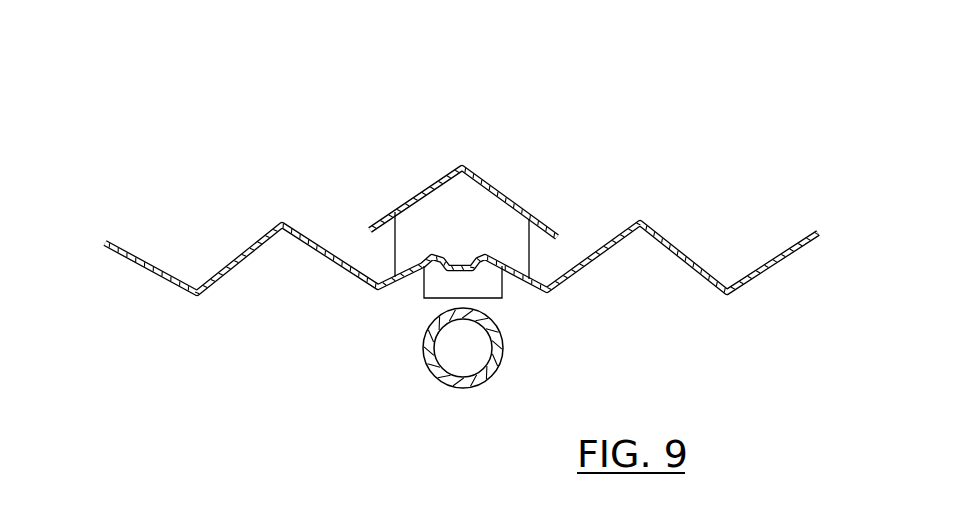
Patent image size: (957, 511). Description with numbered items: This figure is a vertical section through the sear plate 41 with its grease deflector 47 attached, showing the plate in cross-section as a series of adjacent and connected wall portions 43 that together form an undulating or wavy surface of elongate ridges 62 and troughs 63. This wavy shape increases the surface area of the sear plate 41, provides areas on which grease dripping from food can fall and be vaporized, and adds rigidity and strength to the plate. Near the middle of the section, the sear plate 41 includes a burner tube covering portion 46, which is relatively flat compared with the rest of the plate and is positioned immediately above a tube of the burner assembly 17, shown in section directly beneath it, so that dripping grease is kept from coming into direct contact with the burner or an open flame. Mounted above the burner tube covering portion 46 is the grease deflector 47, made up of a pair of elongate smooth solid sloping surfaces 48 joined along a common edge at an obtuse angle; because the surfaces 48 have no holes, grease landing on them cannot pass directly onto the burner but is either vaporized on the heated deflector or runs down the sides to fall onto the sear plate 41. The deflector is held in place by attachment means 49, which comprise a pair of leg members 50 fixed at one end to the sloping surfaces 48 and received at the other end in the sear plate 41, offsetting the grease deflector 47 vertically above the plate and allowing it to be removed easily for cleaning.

The sear plate 41 is at (193, 240).
The wall portions 43 is at (147, 270).
The burner tube covering portion 46 is at (428, 272).
The grease deflector 47 is at (462, 168).
The sloping surfaces 48 is at (398, 208).
The attachment means 49 is at (502, 217).
The leg members 50 is at (438, 294).
The ridges 62 is at (640, 223).
The troughs 63 is at (727, 293).
The burner assembly 17 is at (487, 375).